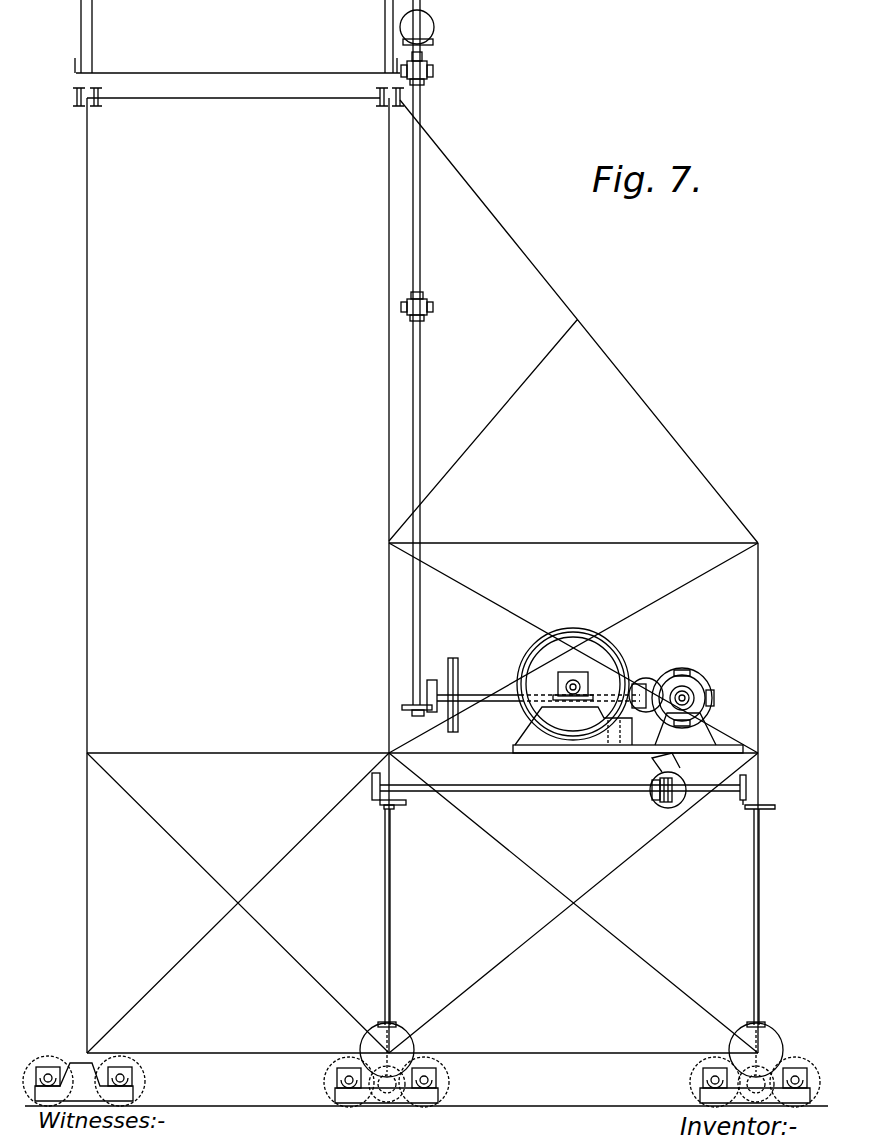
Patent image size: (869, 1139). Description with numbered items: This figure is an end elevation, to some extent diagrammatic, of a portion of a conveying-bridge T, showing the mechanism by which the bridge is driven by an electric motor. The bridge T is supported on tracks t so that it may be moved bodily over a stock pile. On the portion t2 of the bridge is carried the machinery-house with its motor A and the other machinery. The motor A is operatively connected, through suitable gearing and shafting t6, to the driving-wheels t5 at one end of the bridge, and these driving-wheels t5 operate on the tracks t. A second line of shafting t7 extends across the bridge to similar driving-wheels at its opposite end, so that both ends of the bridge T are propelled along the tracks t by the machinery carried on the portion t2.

The conveying-bridge T is at (389, 639).
The tracks t is at (239, 1106).
The portion of the bridge t2 is at (464, 756).
The driving-wheels t5 is at (338, 1060).
The gearing and shafting t6 is at (546, 792).
The second line of shafting t7 is at (427, 26).
The motor A is at (703, 679).